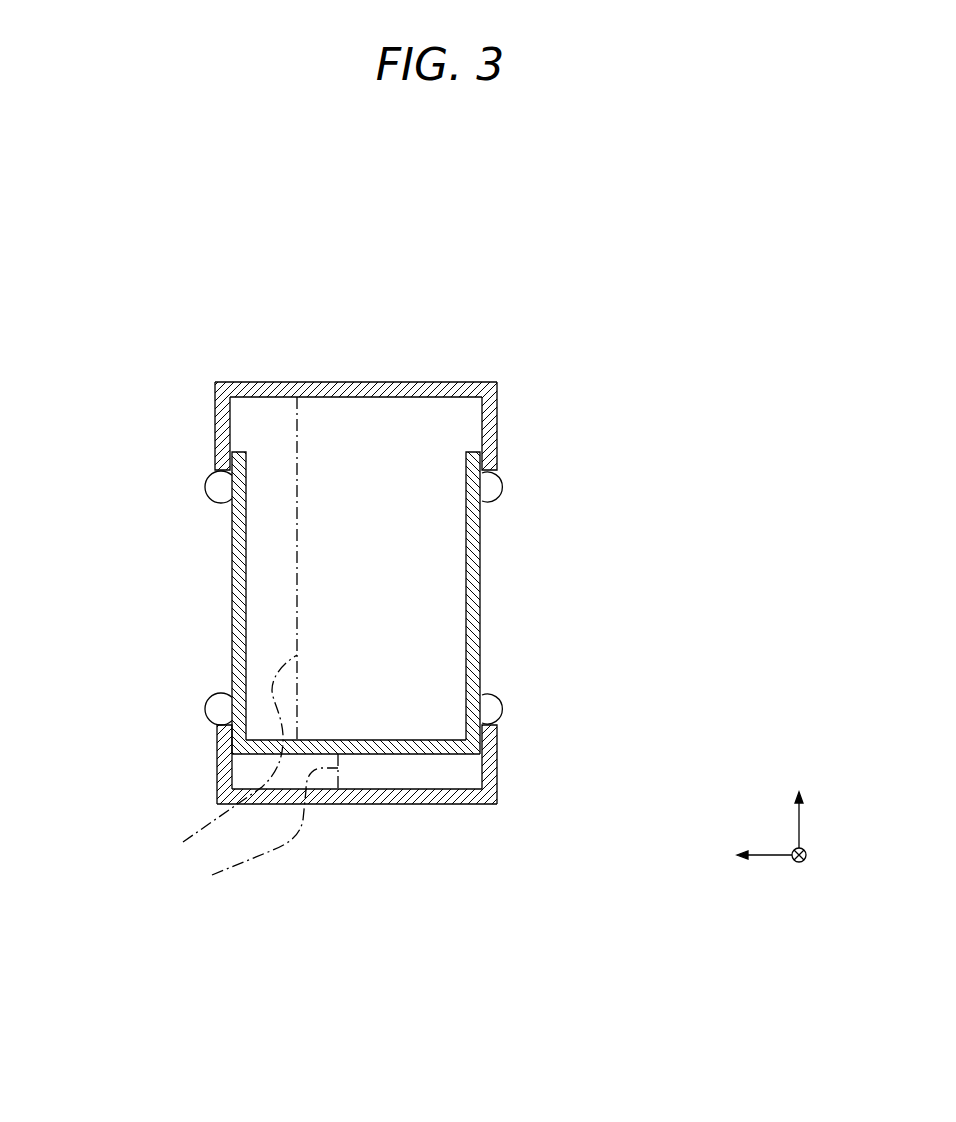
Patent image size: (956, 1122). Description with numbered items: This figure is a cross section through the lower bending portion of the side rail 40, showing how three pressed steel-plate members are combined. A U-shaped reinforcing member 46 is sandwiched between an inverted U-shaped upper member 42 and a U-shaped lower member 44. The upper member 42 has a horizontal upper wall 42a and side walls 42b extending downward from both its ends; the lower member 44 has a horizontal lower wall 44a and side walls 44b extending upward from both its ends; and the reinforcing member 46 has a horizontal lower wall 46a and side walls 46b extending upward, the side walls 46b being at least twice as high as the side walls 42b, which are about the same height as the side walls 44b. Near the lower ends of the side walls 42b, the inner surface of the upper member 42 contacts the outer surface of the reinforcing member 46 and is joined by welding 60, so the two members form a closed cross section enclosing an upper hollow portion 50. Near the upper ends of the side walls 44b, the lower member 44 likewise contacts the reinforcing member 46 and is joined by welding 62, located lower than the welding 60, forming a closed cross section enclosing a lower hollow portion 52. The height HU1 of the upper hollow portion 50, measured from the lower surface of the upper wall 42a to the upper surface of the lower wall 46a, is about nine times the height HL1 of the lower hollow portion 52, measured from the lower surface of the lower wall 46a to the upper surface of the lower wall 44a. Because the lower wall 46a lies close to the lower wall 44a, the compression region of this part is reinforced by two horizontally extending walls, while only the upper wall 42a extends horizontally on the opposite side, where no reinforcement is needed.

The side rail 40 is at (320, 242).
The upper member 42 is at (377, 330).
The upper wall 42a is at (335, 382).
The side walls 42b is at (215, 430).
The lower member 44 is at (381, 875).
The lower wall 44a is at (360, 805).
The side walls 44b is at (217, 768).
The reinforcing member 46 is at (385, 603).
The lower wall 46a is at (428, 738).
The side walls 46b is at (232, 585).
The upper hollow portion 50 is at (374, 603).
The lower hollow portion 52 is at (411, 785).
The welding 60 is at (205, 487).
The welding 62 is at (205, 710).
The height of the upper hollow portion HU1 is at (214, 754).
The height of the lower hollow portion HL1 is at (252, 822).